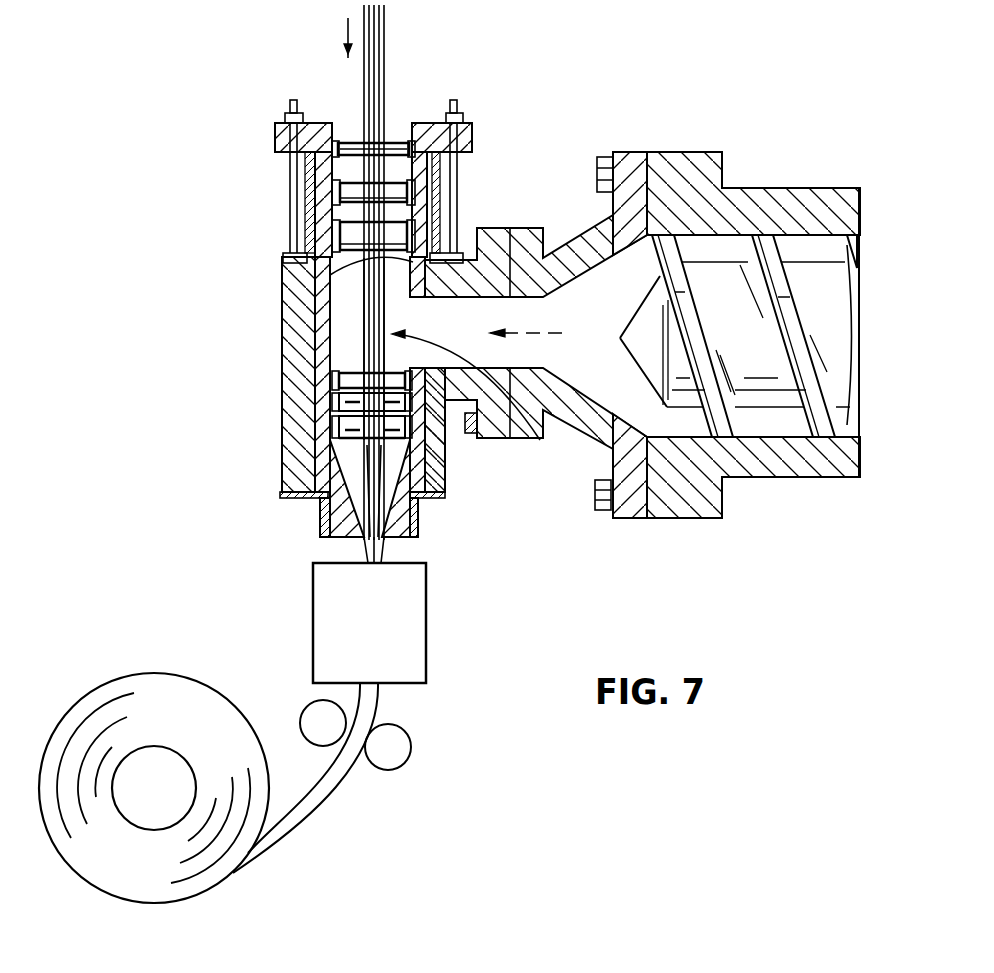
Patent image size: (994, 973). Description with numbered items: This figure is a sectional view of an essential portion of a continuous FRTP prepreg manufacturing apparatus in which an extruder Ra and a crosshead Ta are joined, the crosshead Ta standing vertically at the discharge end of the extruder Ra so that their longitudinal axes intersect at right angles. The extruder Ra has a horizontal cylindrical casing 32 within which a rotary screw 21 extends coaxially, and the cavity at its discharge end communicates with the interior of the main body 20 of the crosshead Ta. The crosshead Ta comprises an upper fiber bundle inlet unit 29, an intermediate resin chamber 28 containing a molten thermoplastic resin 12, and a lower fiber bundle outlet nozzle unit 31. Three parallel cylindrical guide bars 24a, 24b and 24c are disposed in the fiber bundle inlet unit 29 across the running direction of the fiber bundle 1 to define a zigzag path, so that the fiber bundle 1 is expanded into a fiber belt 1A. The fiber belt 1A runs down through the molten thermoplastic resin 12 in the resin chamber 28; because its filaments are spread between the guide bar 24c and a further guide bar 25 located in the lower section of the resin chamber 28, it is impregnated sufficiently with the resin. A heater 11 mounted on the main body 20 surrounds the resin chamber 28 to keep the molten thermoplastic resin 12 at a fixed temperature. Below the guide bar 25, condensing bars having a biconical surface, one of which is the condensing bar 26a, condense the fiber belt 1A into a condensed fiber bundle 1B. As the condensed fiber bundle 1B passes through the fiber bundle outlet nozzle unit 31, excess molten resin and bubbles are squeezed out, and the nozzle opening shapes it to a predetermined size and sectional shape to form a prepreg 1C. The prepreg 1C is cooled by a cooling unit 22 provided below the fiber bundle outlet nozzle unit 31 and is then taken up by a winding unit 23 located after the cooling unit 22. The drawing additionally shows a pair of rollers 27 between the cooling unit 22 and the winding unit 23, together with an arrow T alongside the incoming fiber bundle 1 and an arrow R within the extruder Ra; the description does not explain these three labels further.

The fiber bundle 1 is at (386, 30).
The fiber belt 1A is at (376, 288).
The condensed fiber bundle 1B is at (376, 484).
The prepreg 1C is at (303, 818).
The heater 11 is at (305, 171).
The molten thermoplastic resin 12 is at (598, 273).
The main body 20 is at (420, 165).
The rotary screw 21 is at (722, 270).
The cooling unit 22 is at (318, 645).
The winding unit 23 is at (143, 820).
The guide bar 24a is at (393, 140).
The guide bar 24b is at (337, 190).
The guide bar 24c is at (335, 227).
The guide bar 25 is at (340, 383).
The condensing bar 26a is at (340, 413).
The pinch rollers 27 is at (400, 757).
The resin chamber 28 is at (478, 402).
The fiber bundle inlet unit 29 is at (350, 173).
The fiber bundle outlet nozzle unit 31 is at (328, 542).
The horizontal cylindrical casing 32 is at (785, 470).
The crosshead Ta is at (246, 130).
The extruder Ra is at (686, 128).
The tow feed direction T is at (334, 37).
The resin feed direction R is at (526, 346).